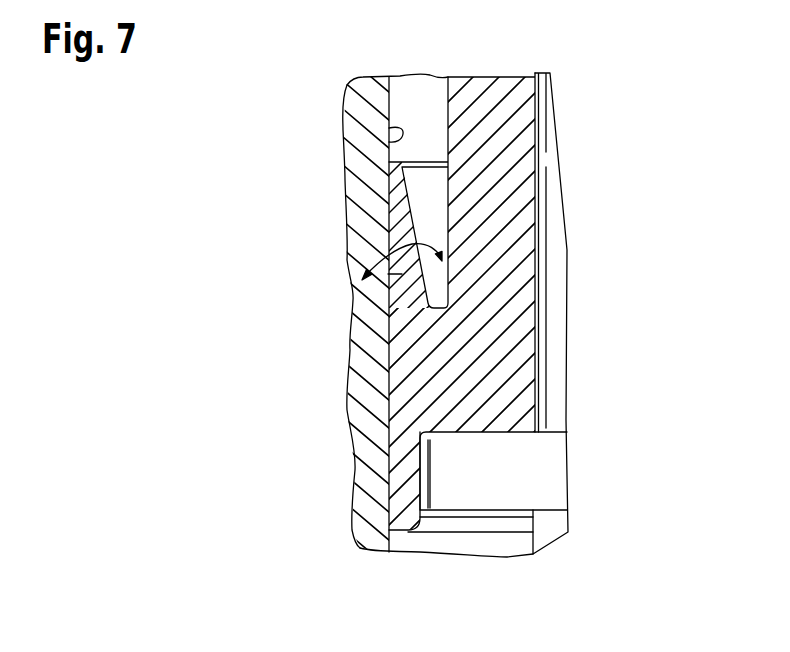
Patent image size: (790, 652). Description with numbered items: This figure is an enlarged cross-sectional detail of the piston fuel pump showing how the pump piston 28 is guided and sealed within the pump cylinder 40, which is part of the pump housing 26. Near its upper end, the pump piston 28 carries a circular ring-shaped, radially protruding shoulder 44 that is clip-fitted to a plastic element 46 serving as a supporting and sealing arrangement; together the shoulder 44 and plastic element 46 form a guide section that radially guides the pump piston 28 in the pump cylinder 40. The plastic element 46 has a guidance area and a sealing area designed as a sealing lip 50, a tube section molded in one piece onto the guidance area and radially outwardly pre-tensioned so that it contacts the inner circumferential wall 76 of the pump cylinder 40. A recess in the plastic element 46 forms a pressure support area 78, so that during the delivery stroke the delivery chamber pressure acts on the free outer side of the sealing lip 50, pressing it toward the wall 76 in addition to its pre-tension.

The pump housing 26 is at (356, 245).
The pump piston 28 is at (554, 113).
The pump cylinder 40 is at (388, 113).
The shoulder 44 is at (498, 478).
The plastic element 46 is at (520, 383).
The sealing lip 50 is at (364, 280).
The inner circumferential wall 76 is at (388, 141).
The pressure support area 78 is at (423, 209).